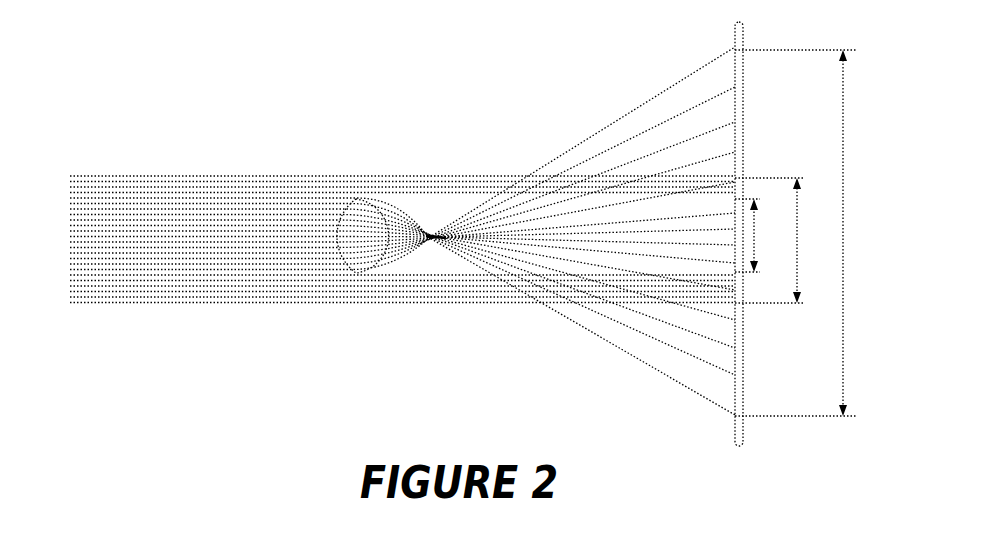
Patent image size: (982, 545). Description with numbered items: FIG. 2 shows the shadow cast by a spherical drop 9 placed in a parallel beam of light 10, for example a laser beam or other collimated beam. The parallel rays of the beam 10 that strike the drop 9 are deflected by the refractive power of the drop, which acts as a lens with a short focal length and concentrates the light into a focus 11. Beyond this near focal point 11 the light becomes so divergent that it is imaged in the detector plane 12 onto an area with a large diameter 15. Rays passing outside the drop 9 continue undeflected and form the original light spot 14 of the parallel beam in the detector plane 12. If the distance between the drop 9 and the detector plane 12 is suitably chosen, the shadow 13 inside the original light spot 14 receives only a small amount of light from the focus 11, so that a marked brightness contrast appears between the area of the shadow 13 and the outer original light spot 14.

The spherical drop 9 is at (359, 202).
The parallel beam of light 10 is at (388, 231).
The focus 11 is at (434, 233).
The detector plane 12 is at (727, 234).
The shadow 13 is at (760, 235).
The original light spot 14 is at (781, 240).
The large diameter 15 is at (804, 233).